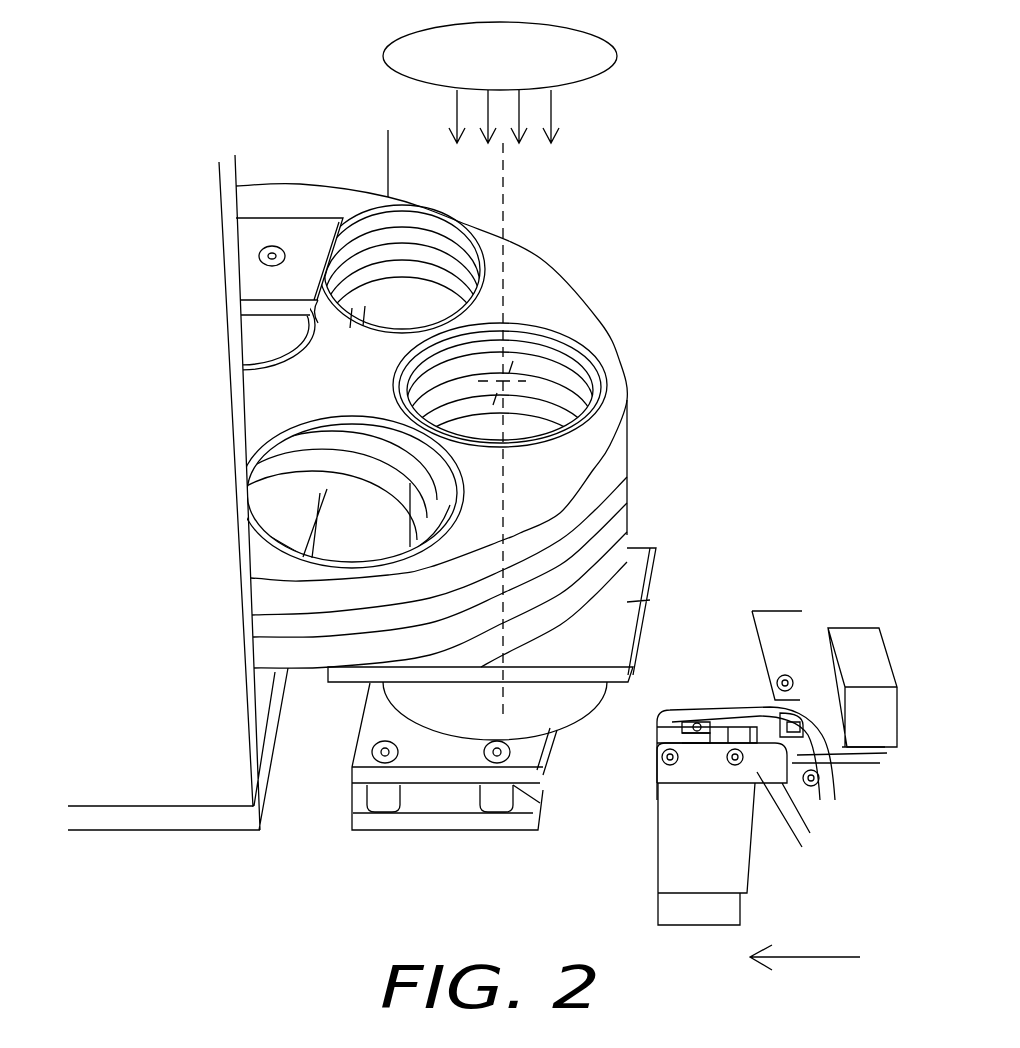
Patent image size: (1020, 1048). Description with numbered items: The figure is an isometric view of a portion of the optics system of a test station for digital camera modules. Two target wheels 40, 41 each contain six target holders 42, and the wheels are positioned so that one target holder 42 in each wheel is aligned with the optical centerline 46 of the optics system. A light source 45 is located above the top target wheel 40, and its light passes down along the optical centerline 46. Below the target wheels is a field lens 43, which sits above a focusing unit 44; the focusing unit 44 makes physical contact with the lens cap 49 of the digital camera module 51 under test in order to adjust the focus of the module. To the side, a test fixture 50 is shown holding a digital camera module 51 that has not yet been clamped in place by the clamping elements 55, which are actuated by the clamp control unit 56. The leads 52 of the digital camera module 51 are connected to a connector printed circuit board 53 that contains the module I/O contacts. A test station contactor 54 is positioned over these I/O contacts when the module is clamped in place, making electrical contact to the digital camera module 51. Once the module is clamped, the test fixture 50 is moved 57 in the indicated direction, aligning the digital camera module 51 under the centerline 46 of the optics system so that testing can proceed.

The target wheel 40 is at (429, 425).
The target wheel 41 is at (628, 516).
The target holder 42 is at (597, 360).
The field lens 43 is at (612, 578).
The focusing unit 44 is at (443, 735).
The light source 45 is at (617, 57).
The optical centerline 46 is at (505, 199).
The lens cap 49 is at (697, 723).
The test fixture 50 is at (658, 723).
The digital camera module 51 is at (678, 730).
The leads 52 is at (732, 712).
The connector printed circuit board 53 is at (835, 770).
The test station contactor 54 is at (873, 763).
The clamping elements 55 is at (658, 732).
The clamp control unit 56 is at (655, 860).
The test fixture movement 57 is at (812, 957).